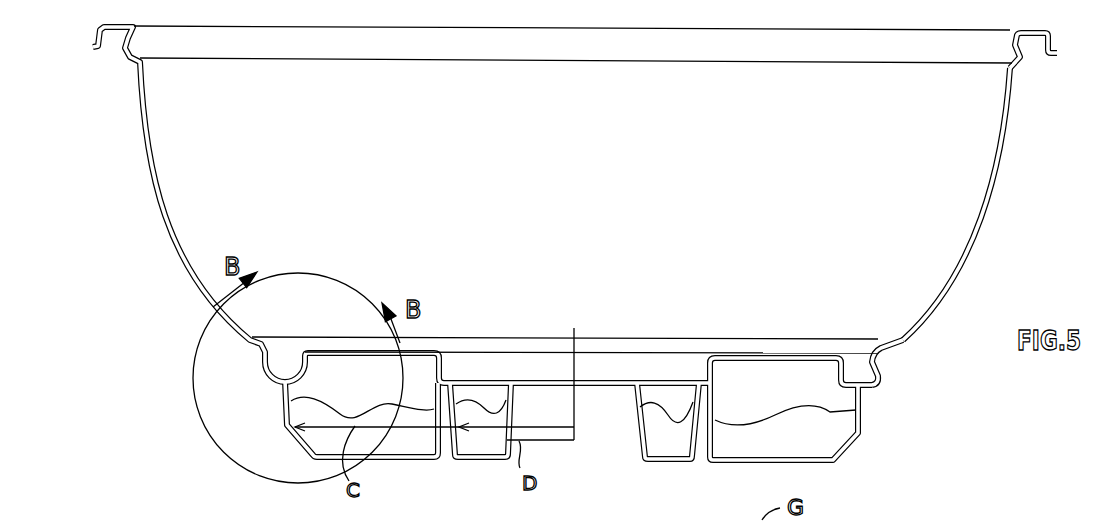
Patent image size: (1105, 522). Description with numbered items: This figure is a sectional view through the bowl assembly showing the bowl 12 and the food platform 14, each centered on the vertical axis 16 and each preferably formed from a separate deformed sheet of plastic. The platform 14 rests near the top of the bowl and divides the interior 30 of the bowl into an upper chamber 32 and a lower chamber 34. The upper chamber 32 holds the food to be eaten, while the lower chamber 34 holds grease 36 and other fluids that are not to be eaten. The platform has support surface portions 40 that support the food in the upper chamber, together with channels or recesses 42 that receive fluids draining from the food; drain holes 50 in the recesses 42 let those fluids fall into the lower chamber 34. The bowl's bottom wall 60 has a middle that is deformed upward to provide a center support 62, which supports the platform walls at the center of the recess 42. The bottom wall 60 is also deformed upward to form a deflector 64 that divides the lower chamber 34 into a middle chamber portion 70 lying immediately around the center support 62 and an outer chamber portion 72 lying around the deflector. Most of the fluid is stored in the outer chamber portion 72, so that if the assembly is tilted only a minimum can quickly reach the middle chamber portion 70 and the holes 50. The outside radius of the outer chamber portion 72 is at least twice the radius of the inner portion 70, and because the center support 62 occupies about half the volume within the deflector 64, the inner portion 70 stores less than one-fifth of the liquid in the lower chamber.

The bowl 12 is at (968, 250).
The food platform 14 is at (546, 335).
The vertical axis 16 is at (571, 476).
The interior 30 is at (989, 191).
The upper chamber 32 is at (754, 283).
The lower chamber 34 is at (750, 404).
The grease 36 is at (797, 419).
The support surface portions 40 is at (778, 356).
The recesses 42 is at (692, 380).
The drain holes 50 is at (486, 379).
The bottom wall 60 is at (392, 459).
The center support 62 is at (538, 388).
The deflector 64 is at (650, 407).
The middle chamber portion 70 is at (502, 409).
The outer chamber portion 72 is at (382, 392).